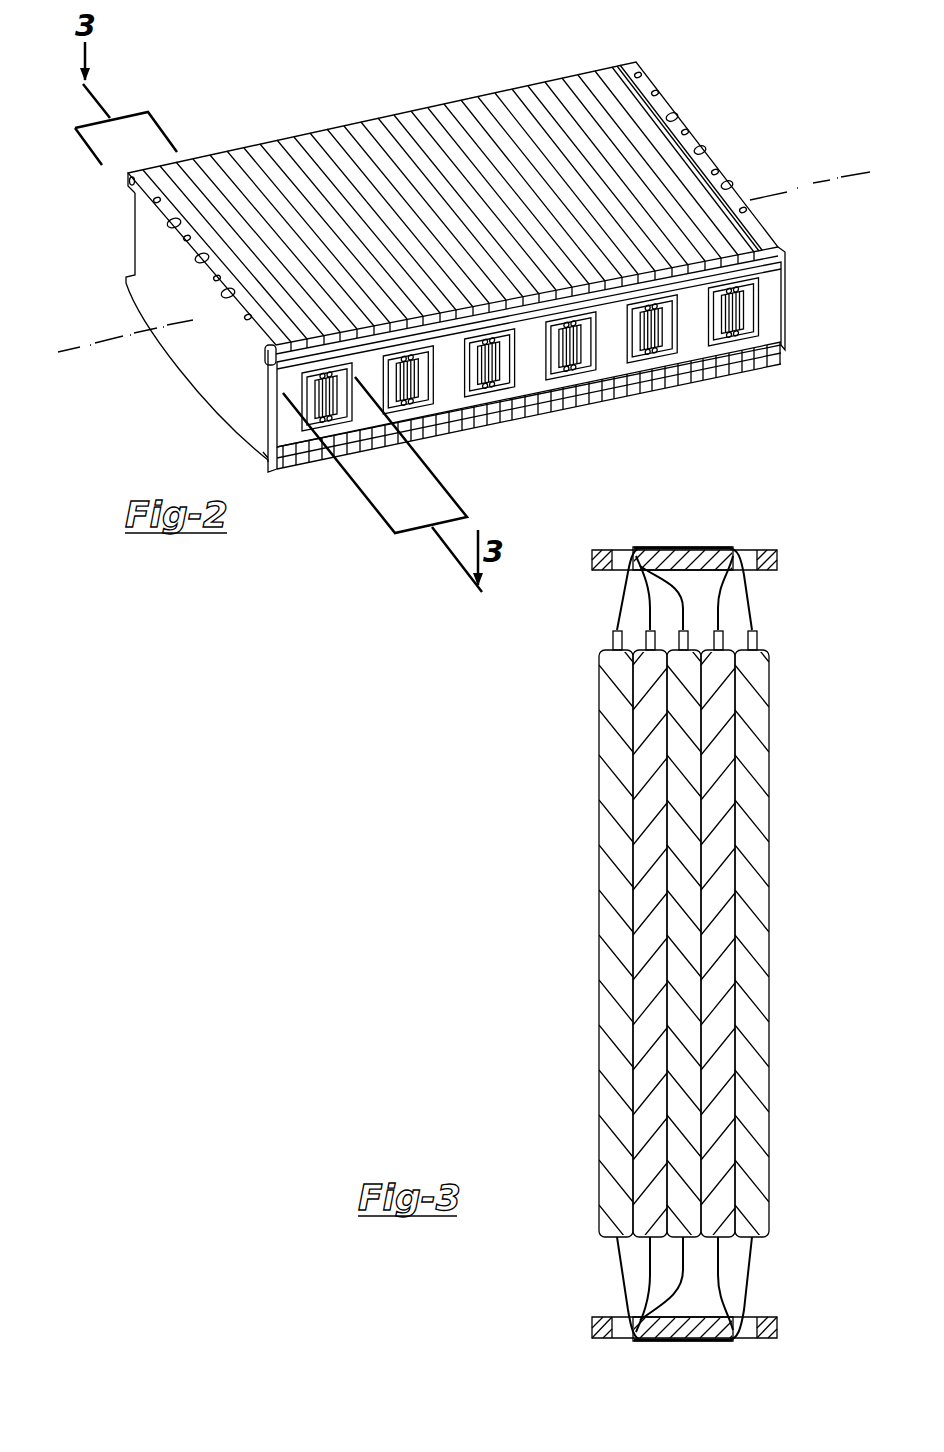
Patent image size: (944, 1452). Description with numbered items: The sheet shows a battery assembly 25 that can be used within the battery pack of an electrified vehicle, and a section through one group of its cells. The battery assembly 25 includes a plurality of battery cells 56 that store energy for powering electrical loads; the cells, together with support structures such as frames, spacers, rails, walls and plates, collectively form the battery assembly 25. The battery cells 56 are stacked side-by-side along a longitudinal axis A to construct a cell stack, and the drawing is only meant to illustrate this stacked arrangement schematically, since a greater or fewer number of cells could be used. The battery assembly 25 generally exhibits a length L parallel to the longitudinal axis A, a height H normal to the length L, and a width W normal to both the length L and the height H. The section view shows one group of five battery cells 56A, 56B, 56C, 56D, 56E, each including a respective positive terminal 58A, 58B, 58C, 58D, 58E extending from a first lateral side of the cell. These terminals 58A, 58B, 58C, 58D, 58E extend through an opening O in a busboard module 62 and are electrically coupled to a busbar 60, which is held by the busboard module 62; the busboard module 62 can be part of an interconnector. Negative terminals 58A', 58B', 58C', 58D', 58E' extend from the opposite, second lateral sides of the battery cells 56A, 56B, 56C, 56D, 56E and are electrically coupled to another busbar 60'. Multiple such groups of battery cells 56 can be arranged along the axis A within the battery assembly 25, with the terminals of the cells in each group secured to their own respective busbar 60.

In FIG. 2, the battery assembly 25 is at (220, 125).
In FIG. 2, the battery cells 56 is at (315, 140).
In FIG. 2, the busbar 60 is at (539, 380).
In FIG. 3, the busbar 60 is at (687, 536).
In FIG. 3, the busboard module 62 is at (600, 560).
In FIG. 3, the terminal 58A is at (618, 603).
In FIG. 3, the terminal 58B is at (585, 593).
In FIG. 3, the terminal 58C is at (599, 589).
In FIG. 3, the terminal 58D is at (772, 593).
In FIG. 3, the terminal 58E is at (781, 594).
In FIG. 3, the negative terminal 58A' is at (618, 1278).
In FIG. 3, the negative terminal 58B' is at (585, 1284).
In FIG. 3, the negative terminal 58C' is at (598, 1288).
In FIG. 3, the negative terminal 58D' is at (775, 1283).
In FIG. 3, the negative terminal 58E' is at (784, 1288).
In FIG. 3, the battery cell 56A is at (682, 917).
In FIG. 3, the battery cell 56B is at (647, 870).
In FIG. 3, the battery cell 56C is at (613, 828).
In FIG. 3, the battery cell 56D is at (722, 835).
In FIG. 3, the battery cell 56E is at (745, 780).
In FIG. 3, the busbar 60' is at (684, 1351).
In FIG. 3, the opening O is at (618, 543).
In FIG. 2, the height H is at (112, 198).
In FIG. 2, the width W is at (201, 411).
In FIG. 2, the length L is at (627, 436).
In FIG. 2, the longitudinal axis A is at (813, 188).